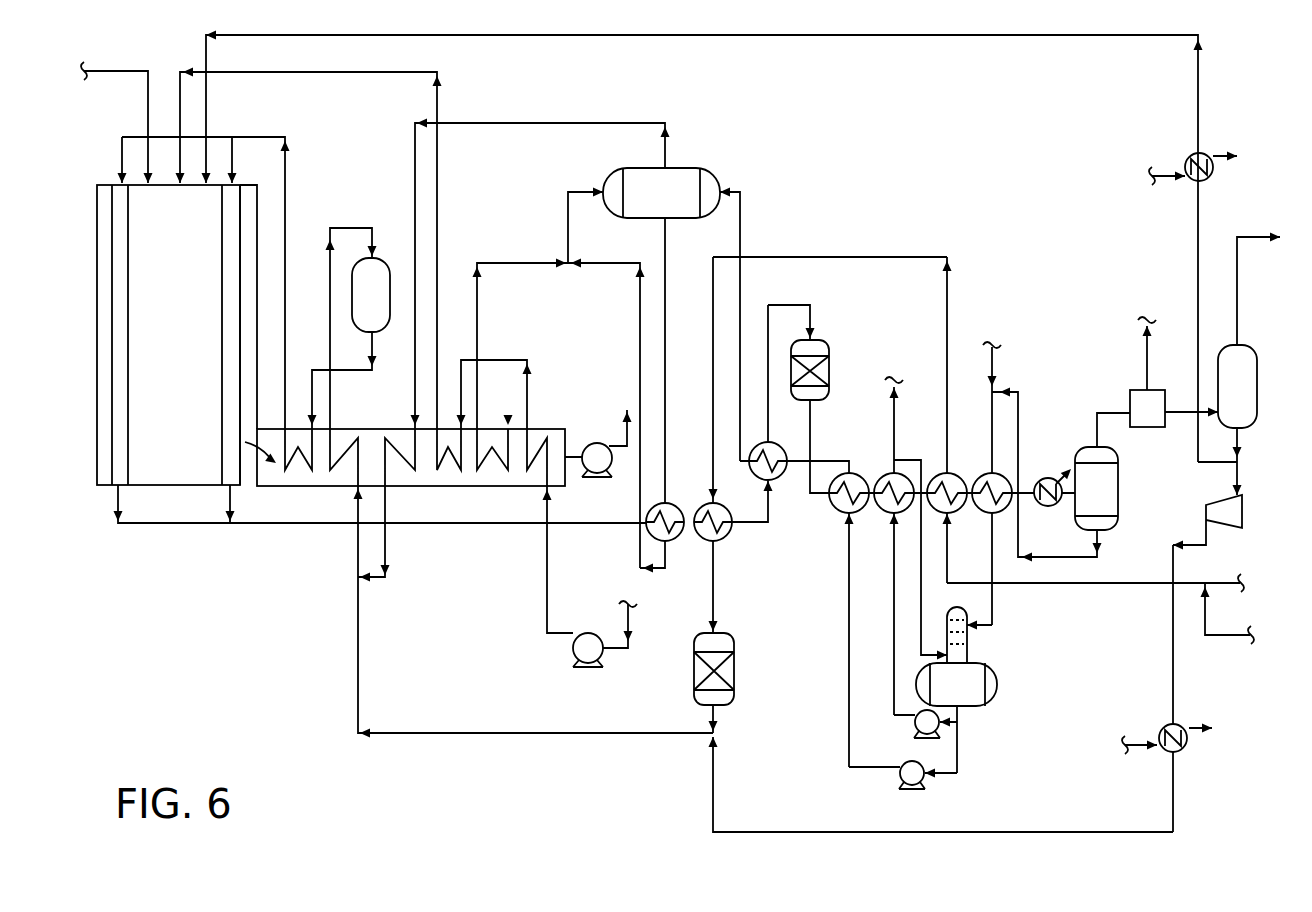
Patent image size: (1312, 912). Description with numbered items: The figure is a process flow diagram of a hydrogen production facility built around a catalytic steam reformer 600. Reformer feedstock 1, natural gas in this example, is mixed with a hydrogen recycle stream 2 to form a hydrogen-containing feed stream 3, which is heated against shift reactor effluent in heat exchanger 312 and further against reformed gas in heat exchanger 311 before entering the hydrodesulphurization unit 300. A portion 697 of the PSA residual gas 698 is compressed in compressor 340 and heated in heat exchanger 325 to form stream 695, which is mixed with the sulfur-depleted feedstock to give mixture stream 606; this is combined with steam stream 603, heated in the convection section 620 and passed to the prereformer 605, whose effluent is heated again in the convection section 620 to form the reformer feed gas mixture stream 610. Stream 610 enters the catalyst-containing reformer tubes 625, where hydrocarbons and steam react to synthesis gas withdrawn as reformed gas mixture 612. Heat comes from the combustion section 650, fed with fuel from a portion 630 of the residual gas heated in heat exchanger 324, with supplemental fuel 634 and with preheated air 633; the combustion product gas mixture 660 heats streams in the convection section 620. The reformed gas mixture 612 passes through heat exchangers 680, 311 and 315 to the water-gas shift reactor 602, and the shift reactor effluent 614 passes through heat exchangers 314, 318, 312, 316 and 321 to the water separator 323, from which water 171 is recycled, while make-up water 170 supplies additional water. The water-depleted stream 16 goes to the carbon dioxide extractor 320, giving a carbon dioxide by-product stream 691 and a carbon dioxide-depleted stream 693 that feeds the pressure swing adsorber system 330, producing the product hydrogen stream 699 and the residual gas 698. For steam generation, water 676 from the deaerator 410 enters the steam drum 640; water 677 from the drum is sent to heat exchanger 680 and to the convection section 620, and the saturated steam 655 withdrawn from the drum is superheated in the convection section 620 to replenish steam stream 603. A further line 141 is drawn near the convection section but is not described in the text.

The catalytic steam reformer 600 is at (97, 255).
The combustion section 650 is at (195, 296).
The catalyst-containing reformer tubes 625 is at (112, 372).
The reformer feed gas mixture stream 610 is at (287, 194).
The reformed gas mixture 612 is at (270, 524).
The steam stream 603 is at (389, 557).
The prereformer 605 is at (389, 305).
The mixture stream 606 is at (506, 733).
The convection section 620 is at (351, 429).
The combustion product gas mixture 660 is at (245, 442).
The portion of the residual gas 630 is at (765, 36).
The preheated air 633 is at (328, 72).
The supplemental fuel 634 is at (135, 66).
The steam drum 640 is at (682, 204).
The saturated stream of steam 655 is at (558, 122).
The water 676 is at (741, 240).
The water from the steam drum 677 is at (665, 277).
The heat exchanger 680 is at (670, 541).
The water-gas shift reactor 602 is at (824, 345).
The shift reactor effluent 614 is at (812, 422).
The pump line 141 is at (550, 588).
The heat exchanger 311 is at (731, 538).
The heat exchanger 315 is at (777, 479).
The heat exchanger 314 is at (857, 511).
The heat exchanger 318 is at (882, 474).
The heat exchanger 312 is at (940, 472).
The heat exchanger 316 is at (985, 474).
The heat exchanger 321 is at (1040, 483).
The water separator 323 is at (1096, 488).
The water 171 is at (1072, 557).
The make-up water 170 is at (993, 362).
The water-depleted stream 16 is at (1106, 411).
The CO2 extractor 320 is at (1148, 408).
The CO2 by-product stream 691 is at (1143, 354).
The CO2-depleted stream 693 is at (1184, 414).
The product hydrogen stream 699 is at (1270, 281).
The pressure swing adsorber system 330 is at (1252, 344).
The PSA residual gas 698 is at (1238, 440).
The portion of the residual gas 697 is at (1242, 476).
The compressor 340 is at (1242, 528).
The heat exchanger 324 is at (1189, 156).
The heat exchanger 325 is at (1188, 752).
The stream 695 is at (1000, 832).
The hydrodesulphurization unit 300 is at (735, 685).
The deaerator 410 is at (998, 687).
The reformer feedstock 1 is at (1228, 585).
The hydrogen recycle stream 2 is at (1226, 638).
The hydrogen-containing feed stream 3 is at (1117, 584).